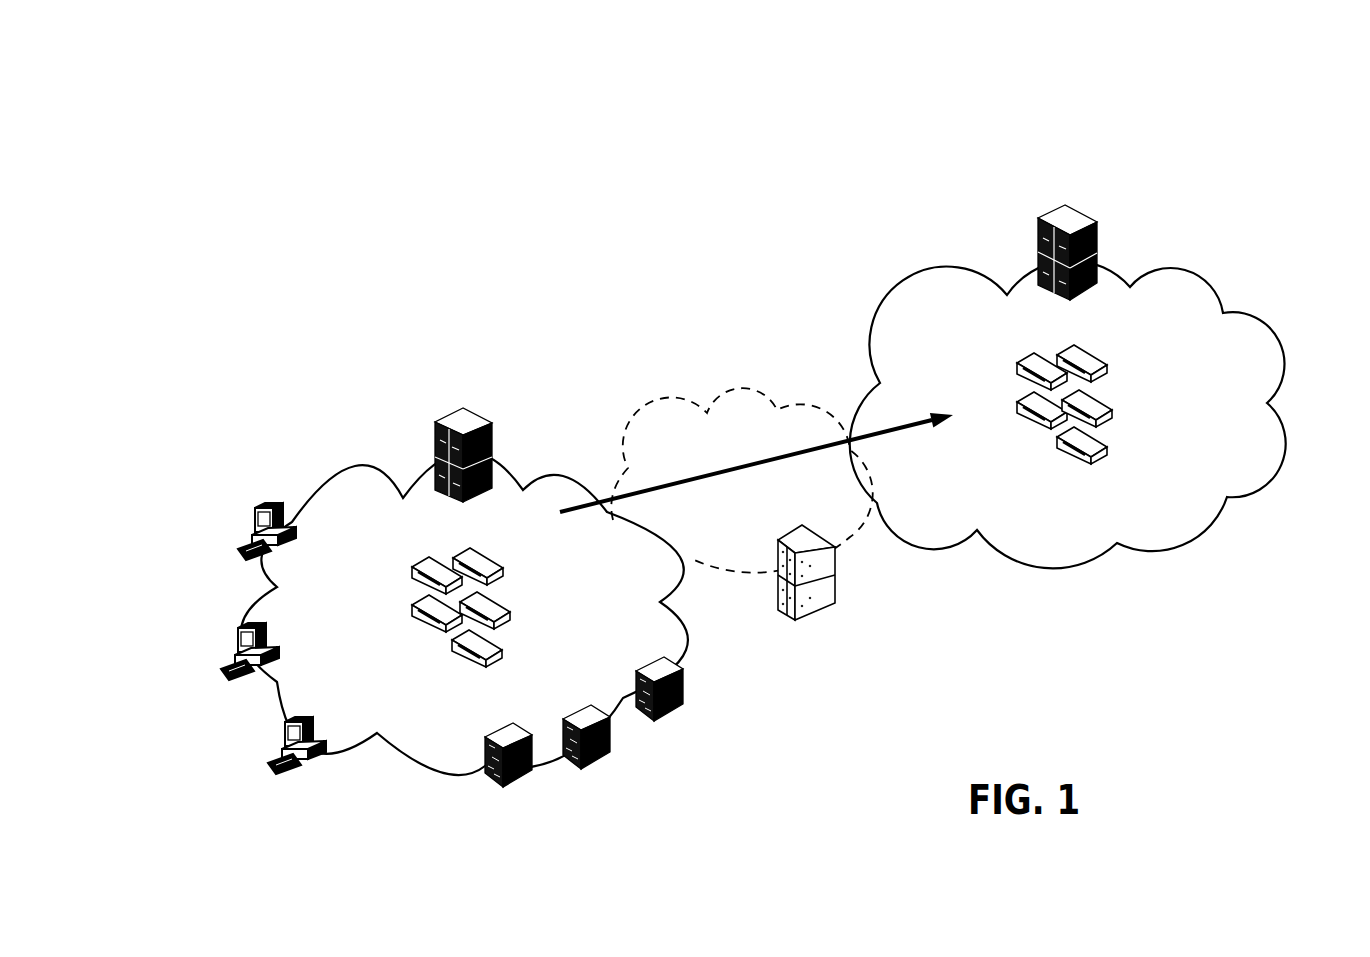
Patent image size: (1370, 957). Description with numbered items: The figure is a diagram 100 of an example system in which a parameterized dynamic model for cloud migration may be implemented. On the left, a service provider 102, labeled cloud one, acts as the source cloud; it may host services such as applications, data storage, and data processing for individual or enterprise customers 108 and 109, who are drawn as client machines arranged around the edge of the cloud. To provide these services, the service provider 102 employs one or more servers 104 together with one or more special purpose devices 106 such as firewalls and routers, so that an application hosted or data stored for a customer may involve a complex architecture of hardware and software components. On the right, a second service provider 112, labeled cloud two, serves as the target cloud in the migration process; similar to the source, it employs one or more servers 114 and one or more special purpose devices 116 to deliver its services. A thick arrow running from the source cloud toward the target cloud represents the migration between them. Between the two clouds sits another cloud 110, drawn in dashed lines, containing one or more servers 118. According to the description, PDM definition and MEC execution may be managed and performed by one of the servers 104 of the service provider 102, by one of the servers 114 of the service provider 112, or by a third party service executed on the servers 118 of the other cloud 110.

The diagram 100 is at (1225, 145).
The service provider (cloud 1) 102 is at (401, 680).
The servers 104 is at (472, 400).
The special purpose devices 106 is at (509, 556).
The customers 108 is at (266, 752).
The customers 109 is at (536, 771).
The another cloud 110 is at (734, 381).
The service provider (cloud 2) 112 is at (1006, 476).
The servers 114 is at (1077, 200).
The special purpose devices 116 is at (1115, 354).
The servers 118 is at (825, 625).